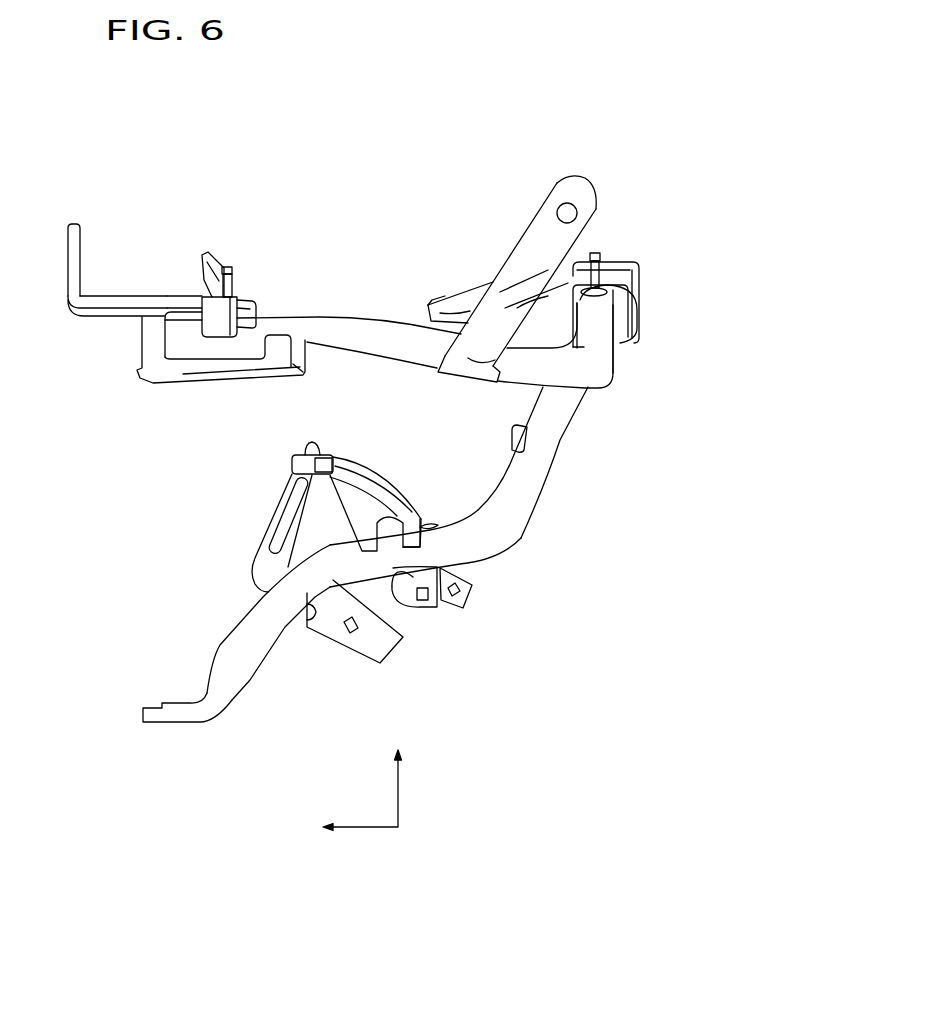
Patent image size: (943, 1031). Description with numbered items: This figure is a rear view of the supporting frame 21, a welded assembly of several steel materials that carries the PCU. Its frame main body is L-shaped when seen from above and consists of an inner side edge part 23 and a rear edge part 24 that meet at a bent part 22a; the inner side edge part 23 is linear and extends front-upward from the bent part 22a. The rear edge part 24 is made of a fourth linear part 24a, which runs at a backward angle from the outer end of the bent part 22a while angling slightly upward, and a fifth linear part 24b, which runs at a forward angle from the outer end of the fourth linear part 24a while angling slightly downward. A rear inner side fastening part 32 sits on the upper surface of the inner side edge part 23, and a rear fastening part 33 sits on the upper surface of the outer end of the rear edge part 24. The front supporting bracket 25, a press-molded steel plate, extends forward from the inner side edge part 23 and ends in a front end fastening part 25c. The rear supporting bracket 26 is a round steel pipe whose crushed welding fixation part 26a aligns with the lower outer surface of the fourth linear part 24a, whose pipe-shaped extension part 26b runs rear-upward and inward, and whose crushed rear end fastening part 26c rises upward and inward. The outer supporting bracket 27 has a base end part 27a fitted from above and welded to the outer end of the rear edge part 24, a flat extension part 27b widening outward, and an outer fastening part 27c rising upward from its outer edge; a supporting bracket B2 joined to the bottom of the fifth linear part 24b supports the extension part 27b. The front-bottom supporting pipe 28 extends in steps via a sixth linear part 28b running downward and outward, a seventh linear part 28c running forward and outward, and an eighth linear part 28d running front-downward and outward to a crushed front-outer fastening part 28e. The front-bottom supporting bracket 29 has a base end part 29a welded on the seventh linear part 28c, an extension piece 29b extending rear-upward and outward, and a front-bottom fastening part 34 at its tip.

The supporting frame 21 is at (591, 85).
The bent part 22a is at (600, 375).
The inner side edge part 23 is at (645, 339).
The rear edge part 24 is at (364, 306).
The fourth linear part 24a is at (433, 358).
The fifth linear part 24b is at (309, 345).
The front supporting bracket 25 is at (482, 270).
The front end fastening part 25c is at (448, 298).
The rear supporting bracket 26 is at (551, 176).
The welding fixation part 26a is at (470, 383).
The extension part 26b is at (517, 308).
The rear end fastening part 26c is at (590, 203).
The outer supporting bracket 27 is at (80, 337).
The base end part 27a is at (183, 302).
The extension part 27b is at (118, 298).
The outer fastening part 27c is at (68, 240).
The front-bottom supporting pipe 28 is at (525, 553).
The sixth linear part 28b is at (563, 413).
The seventh linear part 28c is at (437, 540).
The eighth linear part 28d is at (283, 627).
The front-outer fastening part 28e is at (182, 721).
The front-bottom supporting bracket 29 is at (375, 457).
The base end part 29a is at (425, 520).
The extension piece 29b is at (387, 490).
The rear inner side fastening part 32 is at (608, 288).
The rear fastening part 33 is at (250, 302).
The front-bottom fastening part 34 is at (310, 456).
The supporting bracket B2 is at (210, 375).